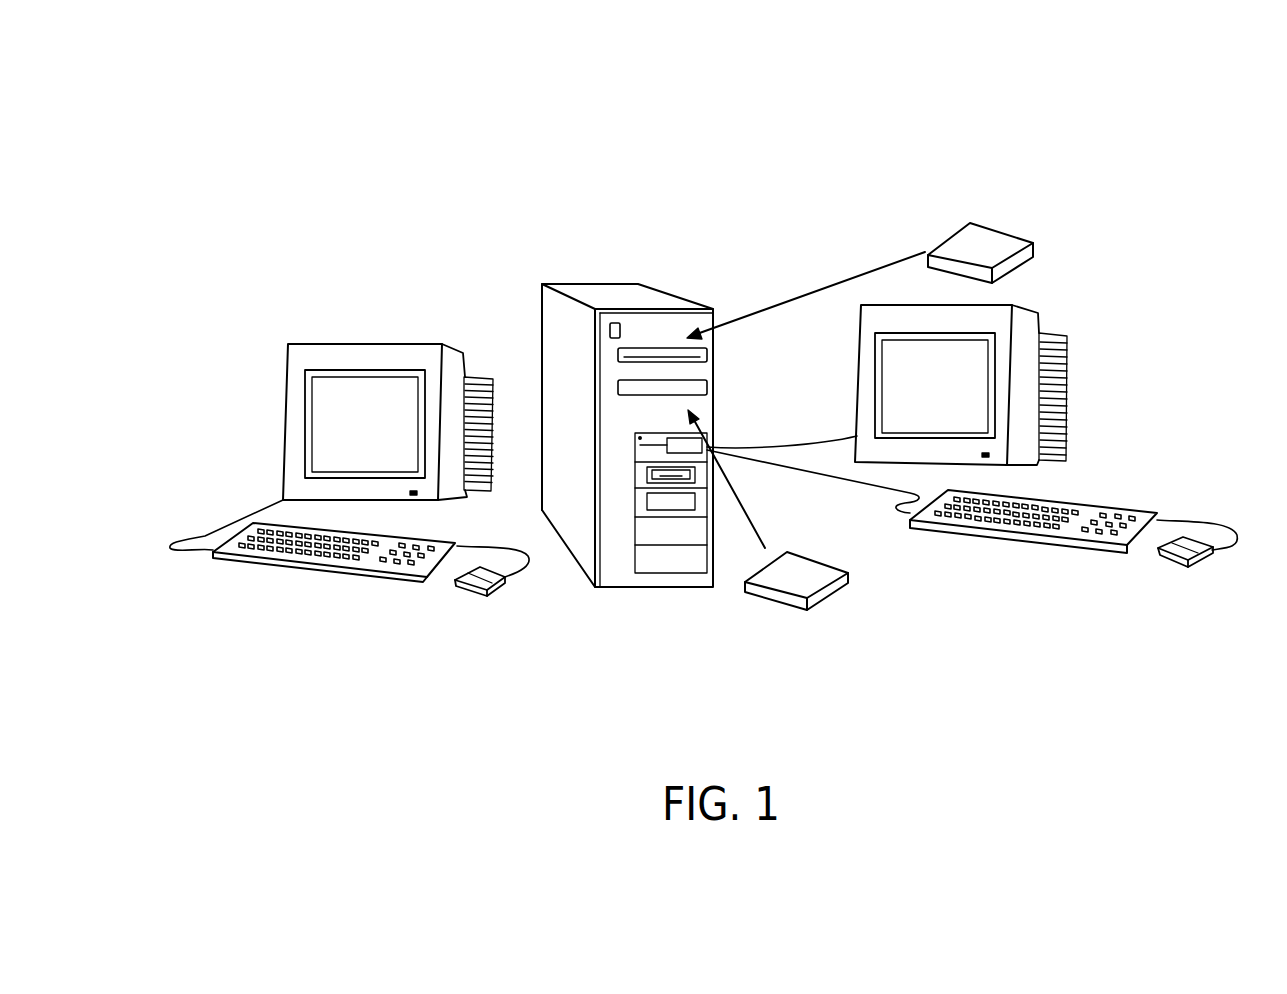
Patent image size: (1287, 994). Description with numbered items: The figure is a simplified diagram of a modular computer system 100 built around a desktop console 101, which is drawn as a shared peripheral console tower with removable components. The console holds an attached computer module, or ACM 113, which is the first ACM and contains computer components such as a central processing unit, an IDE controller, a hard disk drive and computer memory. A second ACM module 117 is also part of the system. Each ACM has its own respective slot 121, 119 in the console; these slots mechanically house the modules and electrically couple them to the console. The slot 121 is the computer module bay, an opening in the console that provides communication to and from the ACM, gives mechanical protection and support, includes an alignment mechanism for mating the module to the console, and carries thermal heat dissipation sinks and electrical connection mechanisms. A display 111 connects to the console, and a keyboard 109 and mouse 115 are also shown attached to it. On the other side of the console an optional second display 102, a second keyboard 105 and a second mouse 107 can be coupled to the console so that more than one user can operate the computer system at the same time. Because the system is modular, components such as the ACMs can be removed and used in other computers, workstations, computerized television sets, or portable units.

The computer system 100 is at (864, 100).
The desktop console 101 is at (650, 293).
The second display 102 is at (293, 353).
The keyboard 105 is at (257, 550).
The mouse 107 is at (492, 592).
The keyboard 109 is at (1045, 535).
The display 111 is at (1067, 397).
The attached computer module (ACM) 113 is at (990, 245).
The mouse 115 is at (1182, 540).
The ACM module 117 is at (790, 608).
The slot 119 is at (637, 395).
The computer module bay (CMB) slot 121 is at (703, 353).